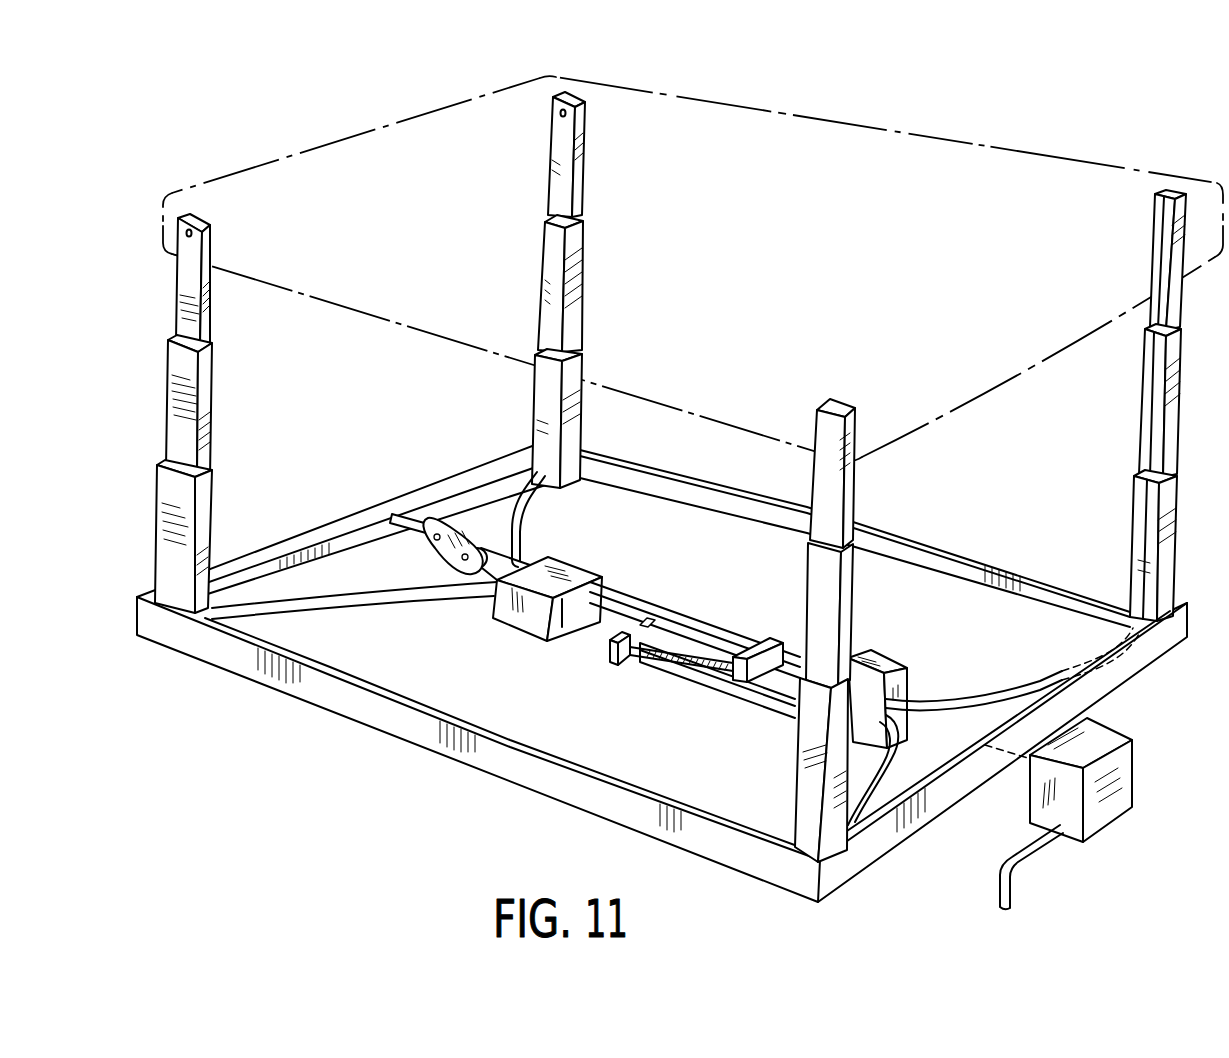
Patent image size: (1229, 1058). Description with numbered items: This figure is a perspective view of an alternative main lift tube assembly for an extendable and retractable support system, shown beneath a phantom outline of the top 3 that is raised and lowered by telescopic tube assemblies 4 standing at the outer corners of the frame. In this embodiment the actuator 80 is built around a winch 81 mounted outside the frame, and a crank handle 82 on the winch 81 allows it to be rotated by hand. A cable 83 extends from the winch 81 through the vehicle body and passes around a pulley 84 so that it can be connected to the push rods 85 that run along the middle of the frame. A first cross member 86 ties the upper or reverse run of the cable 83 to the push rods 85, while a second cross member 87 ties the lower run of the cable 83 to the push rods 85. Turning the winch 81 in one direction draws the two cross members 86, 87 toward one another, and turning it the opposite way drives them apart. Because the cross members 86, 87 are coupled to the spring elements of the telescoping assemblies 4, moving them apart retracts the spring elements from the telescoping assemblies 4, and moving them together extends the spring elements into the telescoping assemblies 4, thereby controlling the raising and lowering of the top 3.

The top 3 is at (976, 146).
The telescopic tube assemblies 4 is at (172, 536).
The actuator 80 is at (682, 604).
The winch 81 is at (1118, 766).
The crank handle 82 is at (1030, 865).
The cable 83 is at (1027, 766).
The pulley 84 is at (431, 522).
The push rods 85 is at (626, 593).
The first cross member 86 is at (773, 639).
The second cross member 87 is at (611, 663).